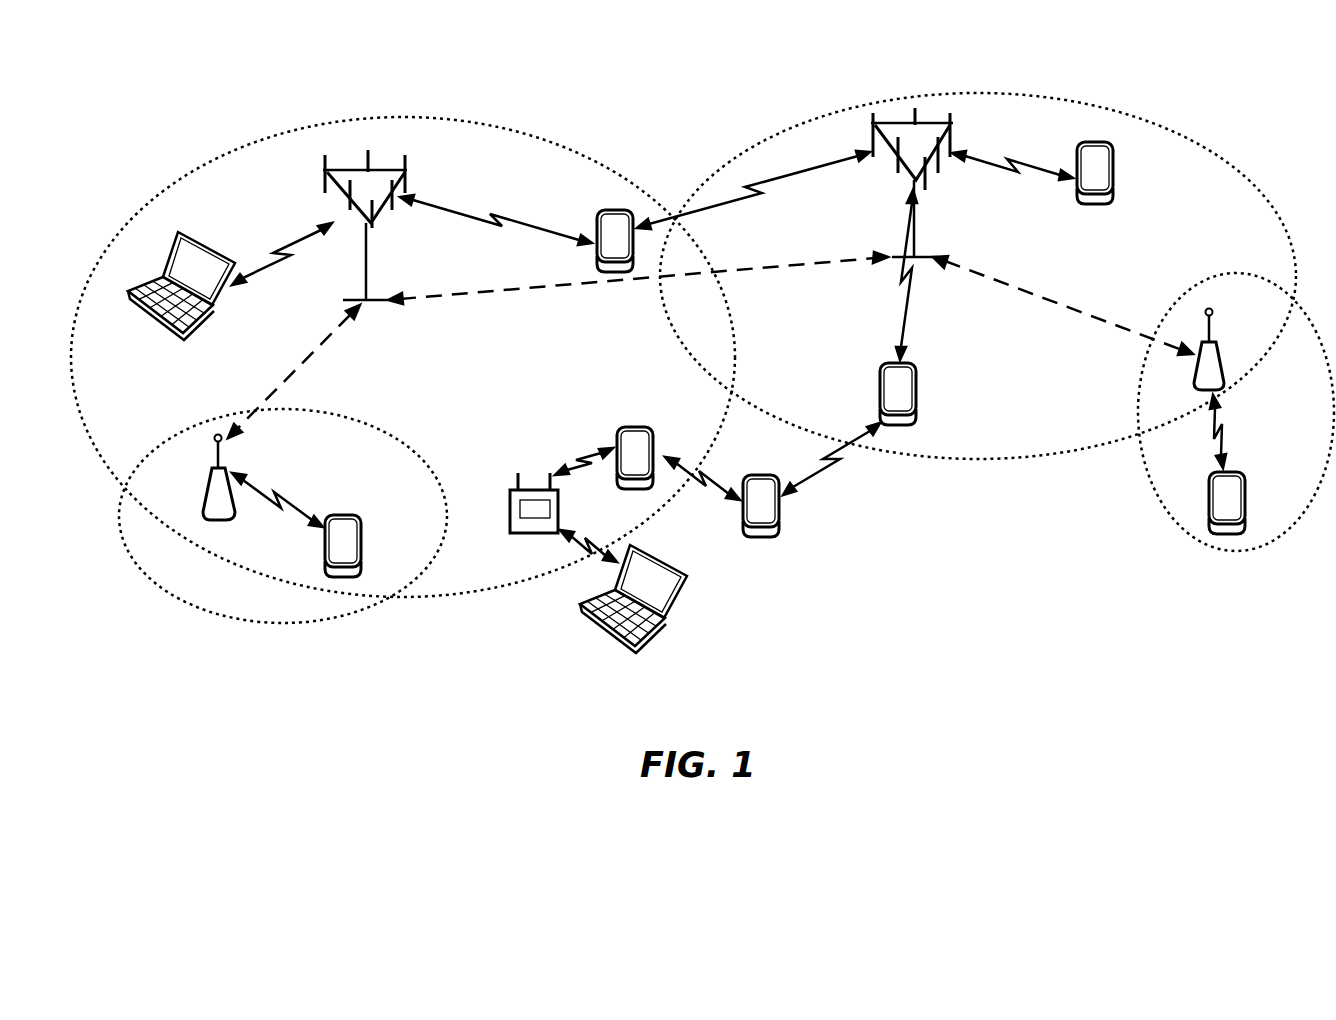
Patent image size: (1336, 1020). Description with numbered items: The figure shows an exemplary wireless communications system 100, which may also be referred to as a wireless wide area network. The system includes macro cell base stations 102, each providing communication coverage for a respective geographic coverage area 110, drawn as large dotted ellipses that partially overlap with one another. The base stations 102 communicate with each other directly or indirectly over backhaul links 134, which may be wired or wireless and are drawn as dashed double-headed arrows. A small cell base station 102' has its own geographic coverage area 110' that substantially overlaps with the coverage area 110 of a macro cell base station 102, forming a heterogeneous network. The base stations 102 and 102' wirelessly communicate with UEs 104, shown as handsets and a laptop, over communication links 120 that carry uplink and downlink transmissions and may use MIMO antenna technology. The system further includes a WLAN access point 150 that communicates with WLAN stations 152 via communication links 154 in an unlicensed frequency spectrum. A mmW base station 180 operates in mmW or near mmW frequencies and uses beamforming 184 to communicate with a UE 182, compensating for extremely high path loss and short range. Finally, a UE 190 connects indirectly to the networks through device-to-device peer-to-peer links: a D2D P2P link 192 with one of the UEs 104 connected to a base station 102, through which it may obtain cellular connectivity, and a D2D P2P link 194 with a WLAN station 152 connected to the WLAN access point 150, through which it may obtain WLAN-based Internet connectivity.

The wireless communications system 100 is at (115, 157).
The geographic coverage area 110 is at (683, 343).
The geographic coverage area of small cell 110' is at (283, 530).
The base station 102 is at (653, 238).
The small cell base station 102' is at (245, 492).
The UE 104 is at (178, 232).
The communication link 120 is at (260, 270).
The backhaul link 134 is at (693, 273).
The WLAN access point 150 is at (540, 535).
The WLAN station 152 is at (643, 430).
The communication link 154 is at (585, 462).
The mmW base station 180 is at (1211, 336).
The UE 182 is at (1225, 534).
The beamforming 184 is at (1220, 432).
The UE 190 is at (758, 537).
The D2D P2P link 192 is at (823, 473).
The D2D P2P link 194 is at (703, 480).